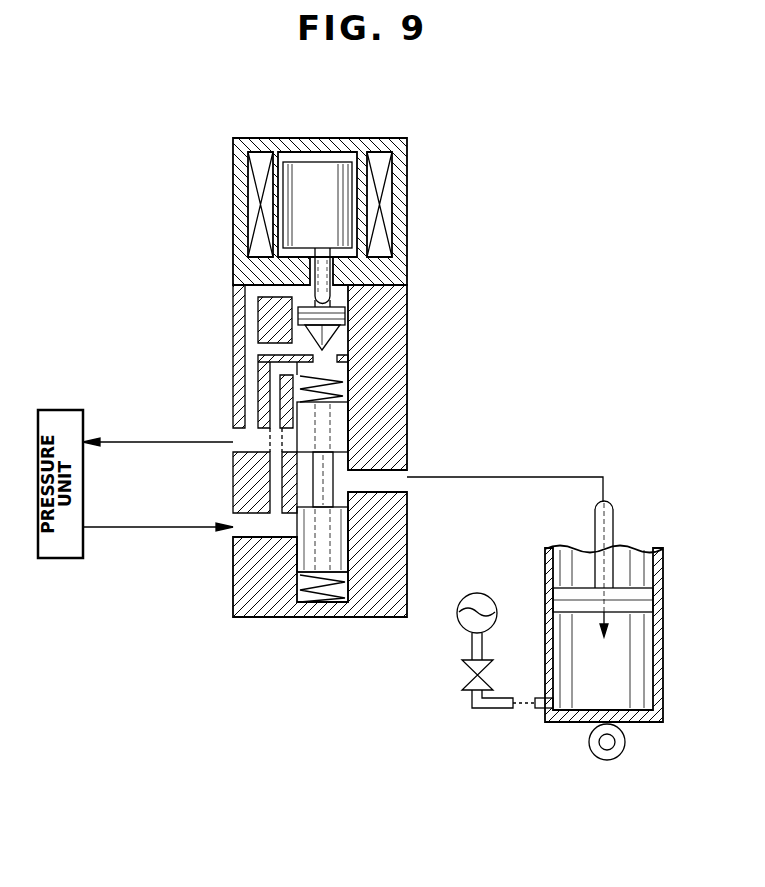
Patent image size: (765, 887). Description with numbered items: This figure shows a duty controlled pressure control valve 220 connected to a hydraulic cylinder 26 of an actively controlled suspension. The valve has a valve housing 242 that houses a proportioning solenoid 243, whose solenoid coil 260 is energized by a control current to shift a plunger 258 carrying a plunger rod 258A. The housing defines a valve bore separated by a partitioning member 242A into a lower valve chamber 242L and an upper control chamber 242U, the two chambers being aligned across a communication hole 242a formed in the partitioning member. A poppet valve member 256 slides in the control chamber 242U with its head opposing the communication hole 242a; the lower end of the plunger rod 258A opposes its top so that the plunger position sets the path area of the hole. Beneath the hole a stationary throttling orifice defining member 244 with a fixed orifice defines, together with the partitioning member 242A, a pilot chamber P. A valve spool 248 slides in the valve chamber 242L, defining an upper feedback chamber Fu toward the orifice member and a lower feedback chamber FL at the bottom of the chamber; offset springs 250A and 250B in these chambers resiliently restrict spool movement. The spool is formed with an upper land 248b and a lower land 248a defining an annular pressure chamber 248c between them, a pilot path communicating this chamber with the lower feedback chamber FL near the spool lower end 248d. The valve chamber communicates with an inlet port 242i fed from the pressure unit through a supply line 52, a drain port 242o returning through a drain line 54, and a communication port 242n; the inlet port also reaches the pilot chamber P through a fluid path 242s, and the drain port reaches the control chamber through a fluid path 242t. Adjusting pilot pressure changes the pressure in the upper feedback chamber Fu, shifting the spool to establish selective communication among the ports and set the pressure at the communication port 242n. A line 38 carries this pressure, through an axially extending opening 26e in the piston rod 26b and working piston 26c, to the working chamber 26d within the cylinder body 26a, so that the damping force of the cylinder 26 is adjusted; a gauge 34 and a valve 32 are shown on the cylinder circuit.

The plunger 258 is at (325, 168).
The solenoid coil 260 is at (257, 172).
The proportioning solenoid 243 is at (412, 180).
The plunger rod 258A is at (329, 250).
The control valve assembly 220 is at (434, 262).
The control chamber 242U is at (298, 310).
The poppet valve member 256 is at (258, 310).
The fluid path 242t is at (248, 328).
The pilot chamber P is at (262, 362).
The offset spring 250A is at (300, 385).
The upper feedback chamber Fu is at (250, 395).
The drain port 242o is at (233, 438).
The return line 54 is at (115, 442).
The valve spool 248 is at (235, 477).
The supply line 52 is at (115, 527).
The fluid path 242s is at (235, 498).
The inlet port 242i is at (236, 545).
The piston lower end 248d is at (236, 585).
The communication hole 242a is at (352, 340).
The partitioning member 242A is at (345, 362).
The throttling orifice defining member 244 is at (352, 375).
The valve housing 242 is at (400, 387).
The valve chamber 242L is at (352, 398).
The upper land 248b is at (350, 432).
The annular pressure chamber 248c is at (350, 456).
The communication port 242n is at (400, 492).
The lower land 248a is at (350, 548).
The pressure line 38 is at (556, 477).
The piston rod 26b is at (614, 508).
The axially extending opening 26e is at (640, 552).
The working piston 26c is at (555, 595).
The pressure gauge 34 is at (464, 625).
The shut-off valve 32 is at (463, 684).
The hydraulic cylinder 26 is at (534, 729).
The cylinder body 26a is at (660, 648).
The working chamber 26d is at (640, 695).
The lower feedback chamber FL is at (285, 619).
The offset spring 250B is at (325, 619).